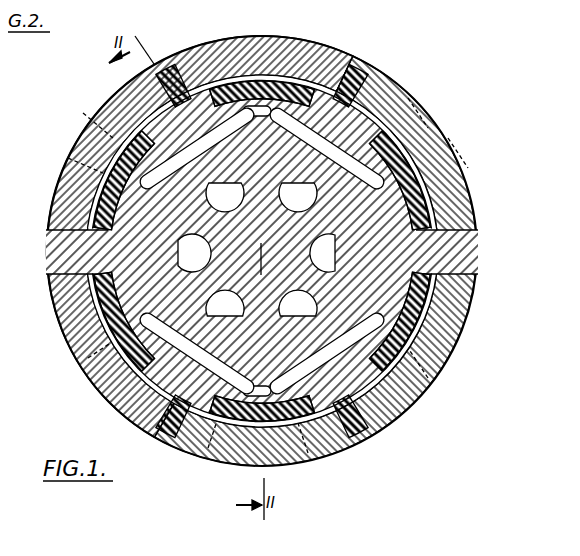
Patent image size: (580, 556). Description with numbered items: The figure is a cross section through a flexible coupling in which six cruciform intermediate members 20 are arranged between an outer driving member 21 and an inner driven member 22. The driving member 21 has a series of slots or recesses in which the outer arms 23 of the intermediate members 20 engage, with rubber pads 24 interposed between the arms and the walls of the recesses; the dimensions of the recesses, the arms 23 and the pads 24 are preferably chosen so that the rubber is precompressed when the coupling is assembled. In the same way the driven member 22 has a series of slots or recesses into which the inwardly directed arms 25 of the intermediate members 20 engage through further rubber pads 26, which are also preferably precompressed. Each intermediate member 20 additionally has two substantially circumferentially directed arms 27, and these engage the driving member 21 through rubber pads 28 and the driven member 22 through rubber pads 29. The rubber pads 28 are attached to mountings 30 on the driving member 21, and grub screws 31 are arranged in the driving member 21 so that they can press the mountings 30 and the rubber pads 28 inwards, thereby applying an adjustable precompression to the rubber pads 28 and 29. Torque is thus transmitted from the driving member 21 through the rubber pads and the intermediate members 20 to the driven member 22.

The intermediate member 20 is at (370, 78).
The driving member 21 is at (460, 197).
The driven member 22 is at (192, 213).
The outer arm 23 is at (146, 53).
The rubber pad 24 is at (152, 50).
The inwardly directed arm 25 is at (240, 223).
The rubber pad 26 is at (210, 280).
The circumferentially directed arm 27 is at (283, 67).
The rubber pad 28 is at (247, 80).
The rubber pad 29 is at (360, 128).
The mounting 30 is at (50, 163).
The grub screw 31 is at (77, 112).